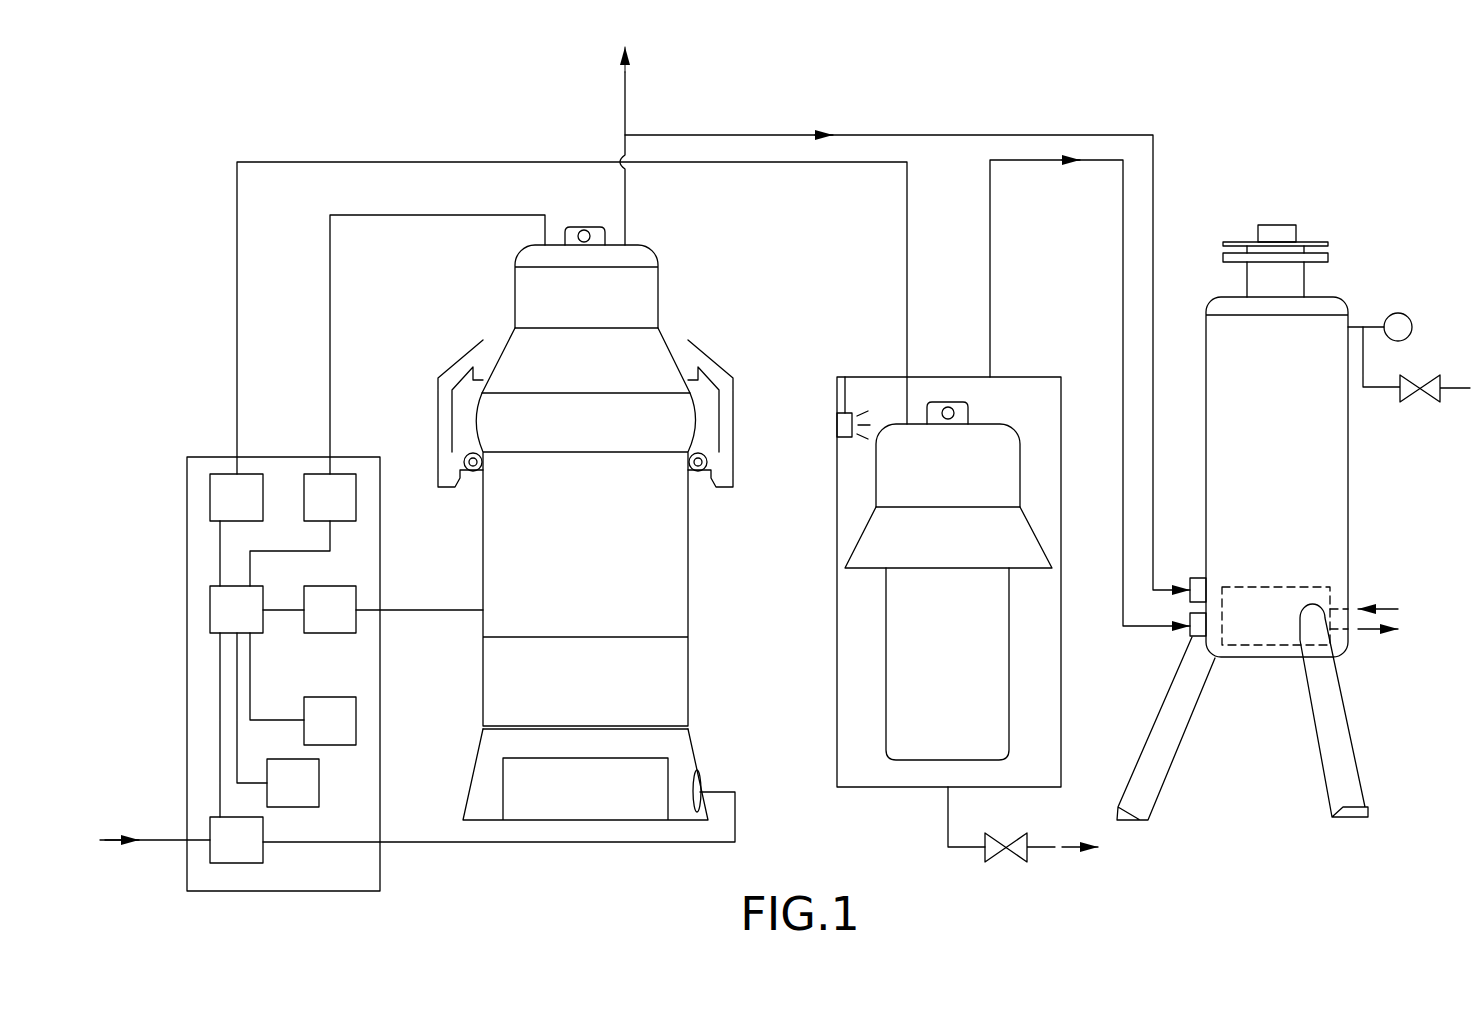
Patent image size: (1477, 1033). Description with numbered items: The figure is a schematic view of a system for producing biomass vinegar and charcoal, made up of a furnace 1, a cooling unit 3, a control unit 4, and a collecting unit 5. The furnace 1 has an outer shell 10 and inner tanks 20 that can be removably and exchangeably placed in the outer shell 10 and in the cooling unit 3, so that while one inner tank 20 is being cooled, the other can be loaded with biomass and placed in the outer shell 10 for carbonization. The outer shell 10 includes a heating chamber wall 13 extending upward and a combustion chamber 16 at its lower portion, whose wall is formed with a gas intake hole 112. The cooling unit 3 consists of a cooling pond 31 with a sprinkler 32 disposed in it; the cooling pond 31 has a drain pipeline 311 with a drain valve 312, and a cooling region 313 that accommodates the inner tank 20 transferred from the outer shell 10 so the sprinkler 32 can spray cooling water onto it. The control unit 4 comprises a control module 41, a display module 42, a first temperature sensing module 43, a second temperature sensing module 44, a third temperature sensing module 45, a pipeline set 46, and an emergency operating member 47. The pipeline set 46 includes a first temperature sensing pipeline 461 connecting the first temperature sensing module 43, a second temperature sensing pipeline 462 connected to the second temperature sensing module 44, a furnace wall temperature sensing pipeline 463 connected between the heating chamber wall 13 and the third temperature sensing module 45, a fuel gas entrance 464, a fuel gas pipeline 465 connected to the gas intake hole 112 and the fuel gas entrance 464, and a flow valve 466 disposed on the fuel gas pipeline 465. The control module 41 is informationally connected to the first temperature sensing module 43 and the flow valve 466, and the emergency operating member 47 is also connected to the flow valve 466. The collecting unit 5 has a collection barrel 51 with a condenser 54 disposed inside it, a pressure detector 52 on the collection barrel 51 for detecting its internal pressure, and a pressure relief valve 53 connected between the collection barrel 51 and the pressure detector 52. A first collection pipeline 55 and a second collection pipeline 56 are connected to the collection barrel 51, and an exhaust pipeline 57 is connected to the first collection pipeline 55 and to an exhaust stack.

The furnace 1 is at (601, 562).
The outer shell 10 is at (692, 576).
The heating chamber wall 13 is at (483, 545).
The combustion chamber 16 is at (583, 812).
The gas intake hole 112 is at (702, 776).
The inner tank 20 is at (668, 334).
The cooling unit 3 is at (918, 573).
The cooling pond 31 is at (832, 622).
The sprinkler 32 is at (845, 377).
The drain pipeline 311 is at (948, 815).
The drain valve 312 is at (1006, 845).
The cooling region 313 is at (845, 692).
The control unit 4 is at (271, 630).
The control module 41 is at (210, 612).
The display module 42 is at (330, 745).
The first temperature sensing module 43 is at (348, 474).
The second temperature sensing module 44 is at (210, 497).
The third temperature sensing module 45 is at (356, 623).
The pipeline set 46 is at (503, 507).
The emergency operating member 47 is at (319, 796).
The first temperature sensing pipeline 461 is at (445, 215).
The second temperature sensing pipeline 462 is at (290, 162).
The furnace wall temperature sensing pipeline 463 is at (447, 611).
The fuel gas entrance 464 is at (161, 838).
The fuel gas pipeline 465 is at (440, 843).
The flow valve 466 is at (210, 847).
The collecting unit 5 is at (1293, 517).
The collection barrel 51 is at (1335, 463).
The pressure detector 52 is at (1410, 318).
The pressure relief valve 53 is at (1428, 375).
The condenser 54 is at (1330, 587).
The first collection pipeline 55 is at (940, 133).
The second collection pipeline 56 is at (1050, 160).
The exhaust pipeline 57 is at (624, 124).